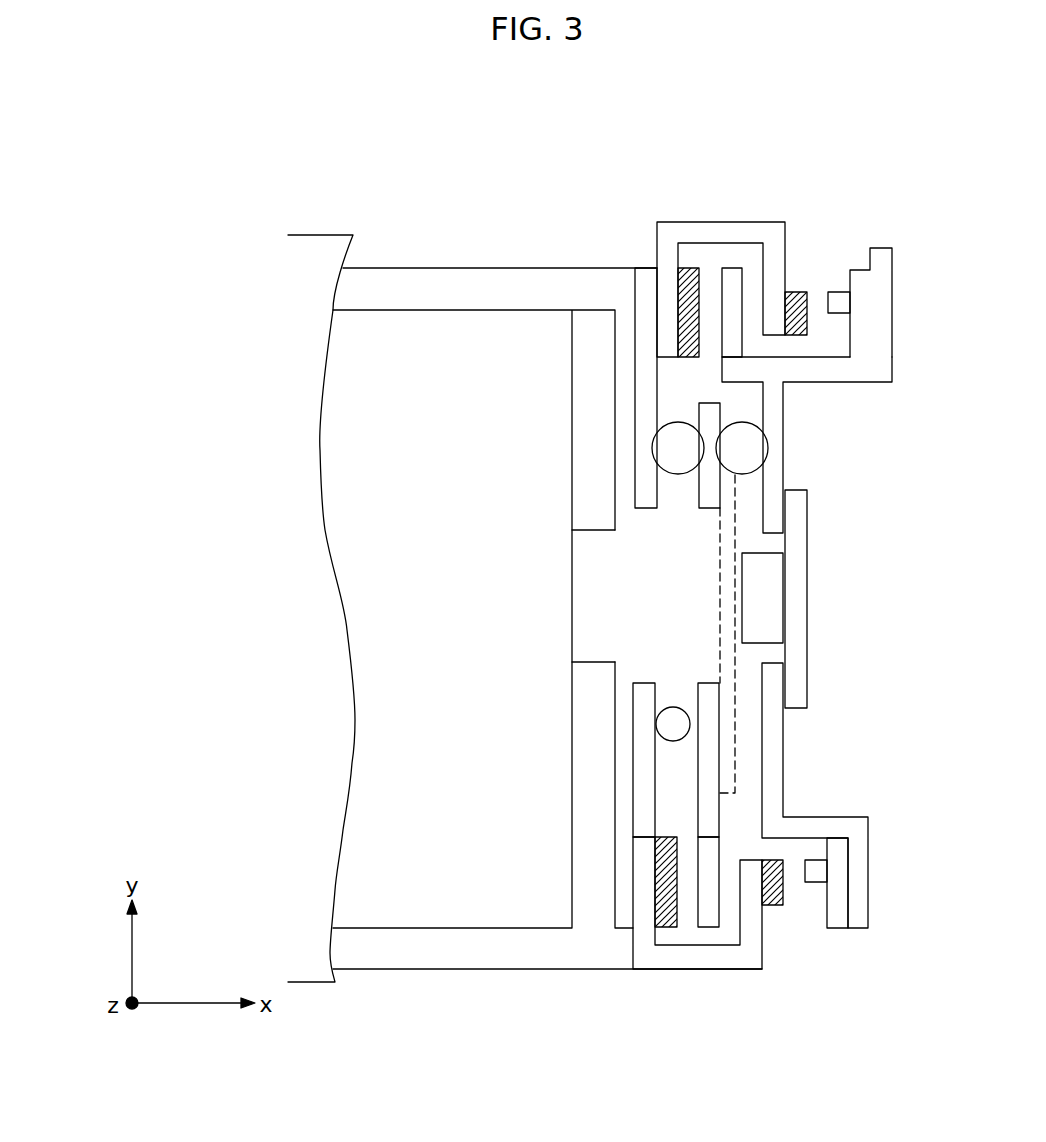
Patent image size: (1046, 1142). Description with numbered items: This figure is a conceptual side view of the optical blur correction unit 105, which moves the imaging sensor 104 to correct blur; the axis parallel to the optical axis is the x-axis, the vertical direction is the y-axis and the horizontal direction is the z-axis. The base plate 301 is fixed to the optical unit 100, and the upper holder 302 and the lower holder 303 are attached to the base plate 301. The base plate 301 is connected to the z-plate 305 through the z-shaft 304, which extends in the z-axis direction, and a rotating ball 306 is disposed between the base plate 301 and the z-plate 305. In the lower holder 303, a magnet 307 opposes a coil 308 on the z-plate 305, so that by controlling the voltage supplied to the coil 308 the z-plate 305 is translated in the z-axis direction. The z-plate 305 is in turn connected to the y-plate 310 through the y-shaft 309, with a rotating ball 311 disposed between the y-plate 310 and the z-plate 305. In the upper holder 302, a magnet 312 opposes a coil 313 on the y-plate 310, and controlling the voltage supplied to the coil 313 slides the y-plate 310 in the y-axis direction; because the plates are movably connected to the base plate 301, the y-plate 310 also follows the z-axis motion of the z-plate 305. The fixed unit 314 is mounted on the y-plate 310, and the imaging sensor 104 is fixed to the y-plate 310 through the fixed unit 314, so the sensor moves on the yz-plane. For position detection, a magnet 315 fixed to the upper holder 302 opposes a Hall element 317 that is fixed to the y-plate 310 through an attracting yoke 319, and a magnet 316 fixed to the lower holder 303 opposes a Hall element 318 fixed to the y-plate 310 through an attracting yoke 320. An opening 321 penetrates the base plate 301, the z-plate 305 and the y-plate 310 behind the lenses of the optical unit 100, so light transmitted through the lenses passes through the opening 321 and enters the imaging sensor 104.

The optical unit 100 is at (425, 267).
The imaging sensor 104 is at (783, 555).
The optical blur correction unit 105 is at (900, 1054).
The base plate 301 is at (645, 510).
The upper holder 302 is at (675, 222).
The lower holder 303 is at (660, 969).
The z-shaft 304 is at (676, 707).
The z-plate 305 is at (706, 510).
The rotating ball 306 is at (676, 423).
The magnet 307 is at (648, 837).
The coil 308 is at (712, 928).
The y-shaft 309 is at (719, 572).
The y-plate 310 is at (785, 440).
The rotating ball 311 is at (752, 425).
The magnet 312 is at (688, 268).
The coil 313 is at (742, 287).
The fixed unit 314 is at (807, 490).
The magnet 315 is at (797, 292).
The magnet 316 is at (770, 905).
The Hall element 317 is at (838, 292).
The Hall element 318 is at (810, 883).
The attracting yoke 319 is at (862, 270).
The attracting yoke 320 is at (842, 930).
The opening 321 is at (578, 600).